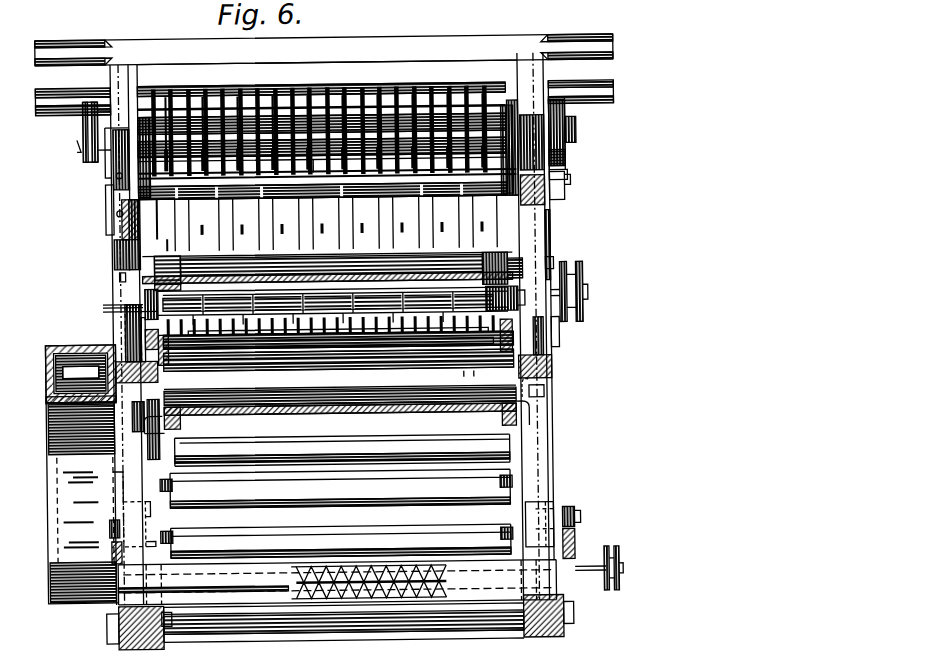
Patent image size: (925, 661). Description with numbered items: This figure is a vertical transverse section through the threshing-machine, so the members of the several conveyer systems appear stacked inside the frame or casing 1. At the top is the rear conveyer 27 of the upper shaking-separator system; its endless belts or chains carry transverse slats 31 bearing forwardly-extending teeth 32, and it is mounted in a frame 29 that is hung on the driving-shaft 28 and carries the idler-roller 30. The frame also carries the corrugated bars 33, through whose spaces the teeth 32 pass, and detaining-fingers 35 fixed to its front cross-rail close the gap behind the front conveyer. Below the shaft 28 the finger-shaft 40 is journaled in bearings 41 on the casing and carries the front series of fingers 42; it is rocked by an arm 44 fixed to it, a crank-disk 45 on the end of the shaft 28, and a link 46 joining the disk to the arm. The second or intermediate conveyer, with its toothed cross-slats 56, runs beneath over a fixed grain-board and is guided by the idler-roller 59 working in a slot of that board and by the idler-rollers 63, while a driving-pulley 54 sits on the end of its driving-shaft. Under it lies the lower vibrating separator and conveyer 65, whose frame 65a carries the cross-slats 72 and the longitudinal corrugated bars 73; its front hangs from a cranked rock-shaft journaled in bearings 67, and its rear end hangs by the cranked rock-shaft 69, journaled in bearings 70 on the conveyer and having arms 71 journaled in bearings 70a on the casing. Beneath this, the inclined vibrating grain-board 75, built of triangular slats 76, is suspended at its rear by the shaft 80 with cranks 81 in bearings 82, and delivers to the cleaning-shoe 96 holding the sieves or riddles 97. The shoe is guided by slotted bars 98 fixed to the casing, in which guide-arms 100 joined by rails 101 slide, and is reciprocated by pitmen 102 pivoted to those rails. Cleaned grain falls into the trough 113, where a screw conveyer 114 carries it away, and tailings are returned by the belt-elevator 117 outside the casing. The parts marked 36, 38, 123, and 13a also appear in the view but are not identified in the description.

The frame or casing 1 is at (136, 42).
The rear conveyer 27 is at (362, 88).
The driving-shaft 28 is at (78, 150).
The conveyer-frame 29 is at (180, 88).
The idler-roller 30 is at (332, 270).
The transverse slats 31 is at (314, 118).
The teeth 32 is at (220, 104).
The corrugated bars 33 is at (300, 97).
The detaining-fingers 35 is at (322, 232).
The roller 36 is at (326, 302).
The pulley 38 is at (82, 128).
The finger-shaft 40 is at (579, 200).
The bearings 41 is at (110, 221).
The fingers 42 is at (372, 234).
The arm 44 is at (568, 181).
The crank-disk 45 is at (566, 161).
The link 46 is at (567, 125).
The driving-pulley 54 is at (583, 300).
The cross-slats 56 is at (166, 262).
The idler-roller 59 is at (117, 279).
The idler-rollers 63 is at (100, 309).
The vibrating separator and conveyer 65 is at (343, 350).
The frame 65a is at (162, 353).
The bearings 67 is at (505, 298).
The cranked rock-shaft 69 is at (110, 342).
The bearings 70 is at (204, 352).
The bearings 70a is at (593, 334).
The arms 71 is at (122, 331).
The cross-slats 72 is at (396, 347).
The corrugated bars or rods 73 is at (252, 342).
The vibrating grain-board 75 is at (176, 432).
The triangular slats 76 is at (465, 402).
The shaft 80 is at (283, 444).
The cranks 81 is at (143, 440).
The bearings 82 is at (545, 401).
The cleaning-shoe 96 is at (340, 488).
The sieves or riddles 97 is at (306, 474).
The slotted bars 98 is at (148, 520).
The guide-arms 100 is at (104, 528).
The rails 101 is at (114, 512).
The pitmen 102 is at (575, 546).
The trough 113 is at (337, 582).
The screw conveyer 114 is at (364, 564).
The belt-elevator 117 is at (82, 500).
The roller 123 is at (318, 310).
The bracket 13a is at (126, 422).